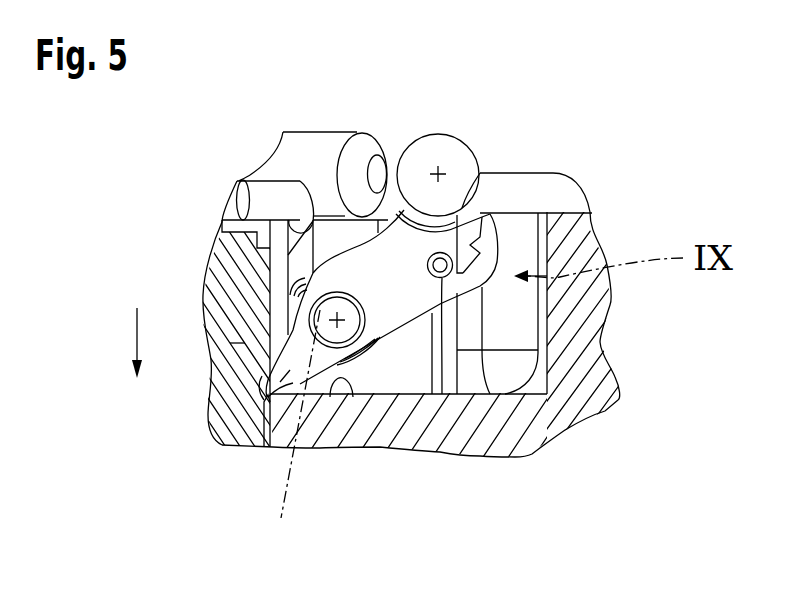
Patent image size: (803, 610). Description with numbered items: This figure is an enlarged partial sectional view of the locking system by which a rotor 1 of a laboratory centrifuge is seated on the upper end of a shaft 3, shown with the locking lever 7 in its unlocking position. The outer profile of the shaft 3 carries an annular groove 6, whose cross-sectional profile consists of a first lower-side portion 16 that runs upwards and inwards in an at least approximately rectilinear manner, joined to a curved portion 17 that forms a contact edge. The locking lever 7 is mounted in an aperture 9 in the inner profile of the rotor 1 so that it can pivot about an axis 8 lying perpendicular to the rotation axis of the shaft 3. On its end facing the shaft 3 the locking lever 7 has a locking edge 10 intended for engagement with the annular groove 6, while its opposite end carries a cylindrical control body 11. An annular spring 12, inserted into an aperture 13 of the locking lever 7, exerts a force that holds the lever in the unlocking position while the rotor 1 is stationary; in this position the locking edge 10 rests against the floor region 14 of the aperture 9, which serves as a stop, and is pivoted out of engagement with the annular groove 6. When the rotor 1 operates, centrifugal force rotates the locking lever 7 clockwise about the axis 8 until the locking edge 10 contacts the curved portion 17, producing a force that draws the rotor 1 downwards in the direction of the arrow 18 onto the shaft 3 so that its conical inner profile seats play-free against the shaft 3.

The rotor 1 is at (557, 420).
The shaft 3 is at (228, 257).
The annular groove 6 is at (268, 360).
The locking lever 7 is at (492, 215).
The axis 8 is at (296, 432).
The aperture 9 is at (503, 365).
The locking edge 10 is at (263, 402).
The cylindrical control body 11 is at (297, 152).
The annular spring 12 is at (440, 395).
The aperture 13 is at (417, 243).
The floor region 14 is at (350, 400).
The first lower-side portion 16 is at (265, 372).
The curved portion 17 is at (235, 313).
The arrow 18 is at (137, 343).